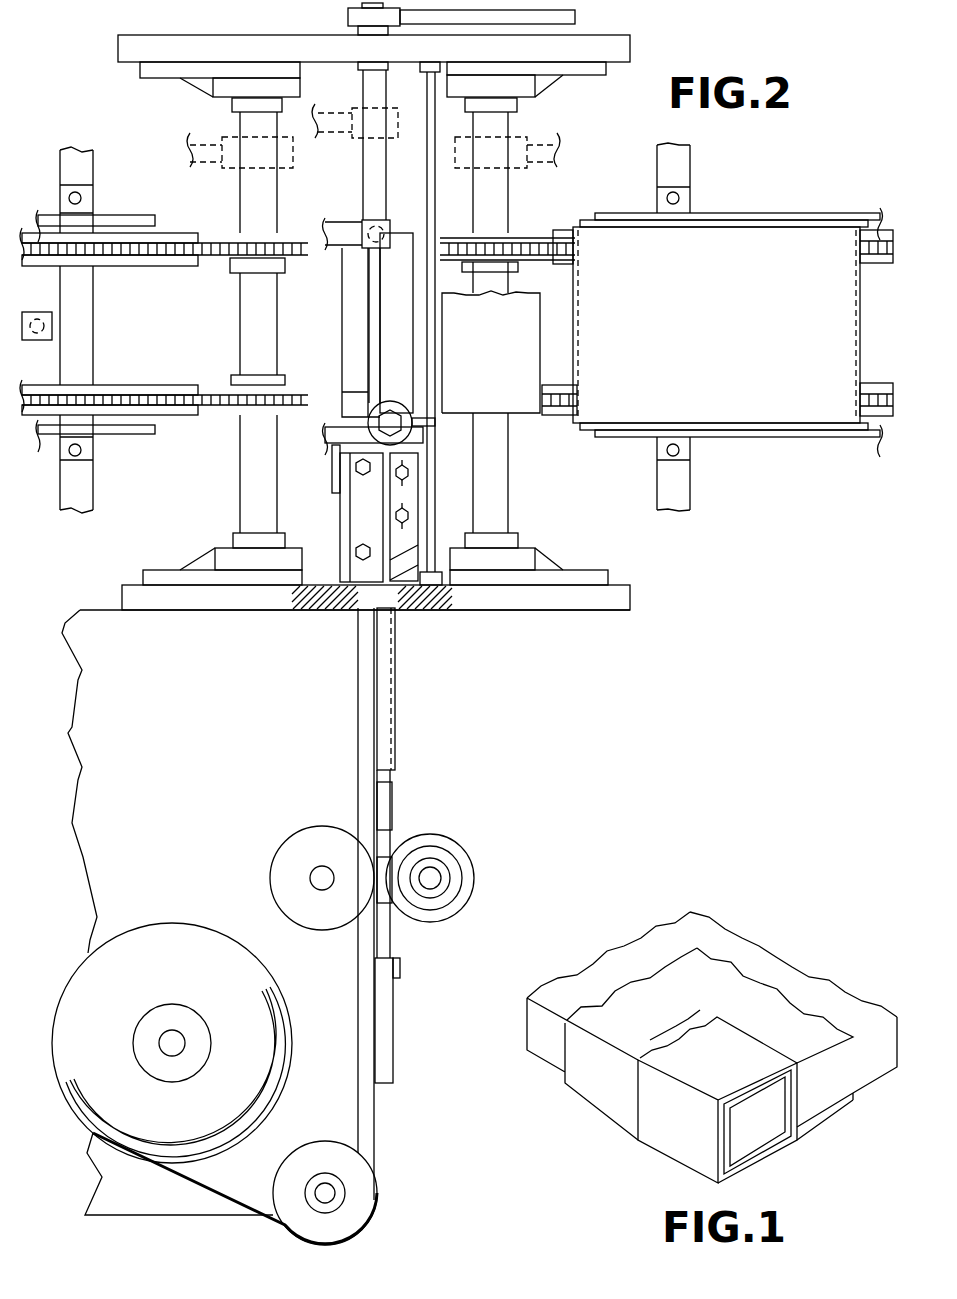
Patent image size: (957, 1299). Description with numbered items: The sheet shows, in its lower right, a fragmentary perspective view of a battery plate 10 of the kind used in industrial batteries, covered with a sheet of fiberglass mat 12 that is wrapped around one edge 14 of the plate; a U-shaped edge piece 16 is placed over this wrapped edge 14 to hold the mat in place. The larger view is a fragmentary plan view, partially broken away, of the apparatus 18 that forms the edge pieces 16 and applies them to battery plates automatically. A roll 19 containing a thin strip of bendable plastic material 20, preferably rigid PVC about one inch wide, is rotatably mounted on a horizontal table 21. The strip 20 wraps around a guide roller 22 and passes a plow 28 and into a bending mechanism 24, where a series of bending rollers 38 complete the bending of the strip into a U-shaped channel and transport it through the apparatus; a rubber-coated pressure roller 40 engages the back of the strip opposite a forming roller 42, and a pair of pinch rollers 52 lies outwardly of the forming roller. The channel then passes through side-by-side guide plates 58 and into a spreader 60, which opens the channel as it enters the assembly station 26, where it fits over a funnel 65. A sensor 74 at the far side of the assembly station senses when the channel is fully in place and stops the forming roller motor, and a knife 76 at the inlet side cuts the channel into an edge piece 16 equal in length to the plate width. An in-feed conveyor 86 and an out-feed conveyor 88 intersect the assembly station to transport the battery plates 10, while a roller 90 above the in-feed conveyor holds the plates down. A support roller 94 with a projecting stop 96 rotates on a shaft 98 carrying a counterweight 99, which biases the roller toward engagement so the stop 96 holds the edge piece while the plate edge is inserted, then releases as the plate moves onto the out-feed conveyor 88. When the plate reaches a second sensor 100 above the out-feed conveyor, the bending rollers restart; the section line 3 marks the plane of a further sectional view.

In FIG. 2, the battery plate 10 is at (775, 240).
In FIG. 1, the battery plate 10 is at (845, 1005).
In FIG. 1, the fiberglass mat 12 is at (680, 975).
In FIG. 1, the edge 14 is at (745, 1135).
In FIG. 2, the U-shaped edge piece 16 is at (384, 312).
In FIG. 1, the U-shaped edge piece 16 is at (672, 1143).
In FIG. 2, the apparatus 18 is at (670, 572).
In FIG. 2, the roll 19 is at (153, 940).
In FIG. 2, the strip of bendable plastic material 20 is at (205, 1190).
In FIG. 2, the horizontal table 21 is at (206, 738).
In FIG. 2, the guide roller 22 is at (365, 1200).
In FIG. 2, the bending mechanism 24 is at (445, 778).
In FIG. 2, the assembly station 26 is at (290, 311).
In FIG. 2, the plow 28 is at (412, 1024).
In FIG. 2, the bending rollers 38 is at (494, 886).
In FIG. 2, the pressure roller 40 is at (272, 878).
In FIG. 2, the forming roller 42 is at (472, 862).
In FIG. 2, the pinch rollers 52 is at (388, 805).
In FIG. 2, the guide plates 58 is at (385, 712).
In FIG. 2, the spreader 60 is at (328, 513).
In FIG. 2, the funnel 65 is at (402, 342).
In FIG. 2, the sensor 74 is at (395, 222).
In FIG. 2, the knife 76 is at (360, 433).
In FIG. 2, the in-feed conveyor 86 is at (537, 237).
In FIG. 2, the out-feed conveyor 88 is at (215, 412).
In FIG. 2, the roller 90 is at (520, 395).
In FIG. 2, the roller 94 is at (357, 307).
In FIG. 2, the stop 96 is at (340, 392).
In FIG. 2, the shaft 98 is at (362, 184).
In FIG. 2, the counterweight 99 is at (575, 17).
In FIG. 2, the second sensor 100 is at (52, 325).
In FIG. 2, the section line 3- 3 is at (481, 670).